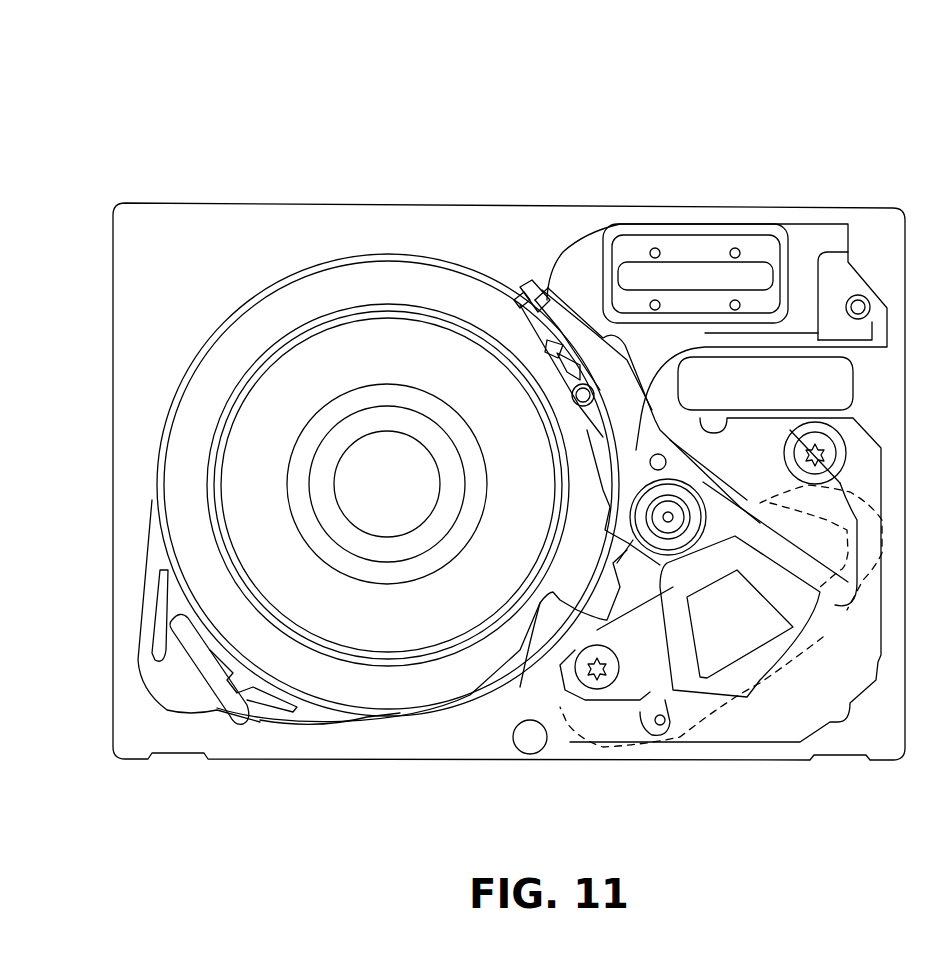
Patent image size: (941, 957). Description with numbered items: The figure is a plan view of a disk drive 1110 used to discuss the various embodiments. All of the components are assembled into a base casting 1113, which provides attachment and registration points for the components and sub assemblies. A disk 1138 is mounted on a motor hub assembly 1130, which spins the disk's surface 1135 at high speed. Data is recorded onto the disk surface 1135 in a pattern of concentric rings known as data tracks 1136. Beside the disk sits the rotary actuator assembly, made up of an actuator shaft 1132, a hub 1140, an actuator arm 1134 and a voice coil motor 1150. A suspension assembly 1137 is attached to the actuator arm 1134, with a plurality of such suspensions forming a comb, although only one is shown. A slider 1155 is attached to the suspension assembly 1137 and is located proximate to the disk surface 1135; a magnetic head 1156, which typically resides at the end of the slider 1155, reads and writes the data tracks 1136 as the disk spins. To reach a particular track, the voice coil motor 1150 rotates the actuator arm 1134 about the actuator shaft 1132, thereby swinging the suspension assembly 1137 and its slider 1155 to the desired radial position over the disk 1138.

The disk drive 1110 is at (185, 108).
The base casting 1113 is at (137, 435).
The motor hub assembly 1130 is at (388, 477).
The actuator shaft 1132 is at (668, 517).
The actuator arm 1134 is at (617, 397).
The disk surface 1135 is at (313, 297).
The data tracks 1136 is at (220, 543).
The suspension assembly 1137 is at (545, 293).
The disk 1138 is at (280, 281).
The hub 1140 is at (630, 540).
The voice coil motor 1150 is at (738, 702).
The slider 1155 is at (527, 290).
The magnetic head 1156 is at (517, 297).